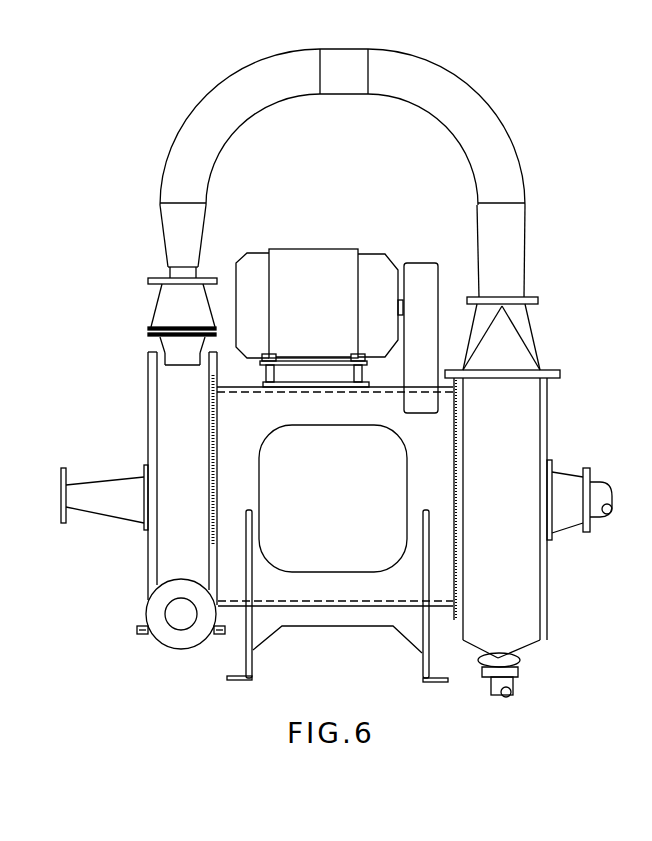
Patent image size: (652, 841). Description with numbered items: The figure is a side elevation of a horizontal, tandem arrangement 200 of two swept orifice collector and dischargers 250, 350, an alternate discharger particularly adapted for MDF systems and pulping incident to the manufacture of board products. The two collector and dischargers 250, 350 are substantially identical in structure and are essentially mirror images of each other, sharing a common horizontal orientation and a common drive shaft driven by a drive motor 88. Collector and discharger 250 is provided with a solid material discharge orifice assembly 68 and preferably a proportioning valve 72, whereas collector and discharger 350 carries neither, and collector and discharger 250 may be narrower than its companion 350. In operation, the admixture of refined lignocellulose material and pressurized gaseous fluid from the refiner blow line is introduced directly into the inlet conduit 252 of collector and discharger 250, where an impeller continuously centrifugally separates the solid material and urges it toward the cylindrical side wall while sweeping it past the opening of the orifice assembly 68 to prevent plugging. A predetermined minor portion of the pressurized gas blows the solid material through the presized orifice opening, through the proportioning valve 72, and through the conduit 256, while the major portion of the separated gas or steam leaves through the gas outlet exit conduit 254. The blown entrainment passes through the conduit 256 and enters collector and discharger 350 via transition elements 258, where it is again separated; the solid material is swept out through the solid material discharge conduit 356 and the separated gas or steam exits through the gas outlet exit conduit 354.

The conduit 256 is at (222, 153).
The tandem arrangement 200 is at (325, 223).
The drive motor 88 is at (333, 250).
The proportioning valve 72 is at (162, 298).
The solid material discharge orifice assembly 68 is at (162, 345).
The collector and discharger 250 is at (134, 395).
The gas outlet exit conduit 254 is at (115, 518).
The inlet conduit 252 is at (177, 647).
The transition elements 258 is at (538, 342).
The collector and discharger 350 is at (569, 403).
The gas outlet exit conduit 354 is at (565, 525).
The solid material discharge conduit 356 is at (513, 685).